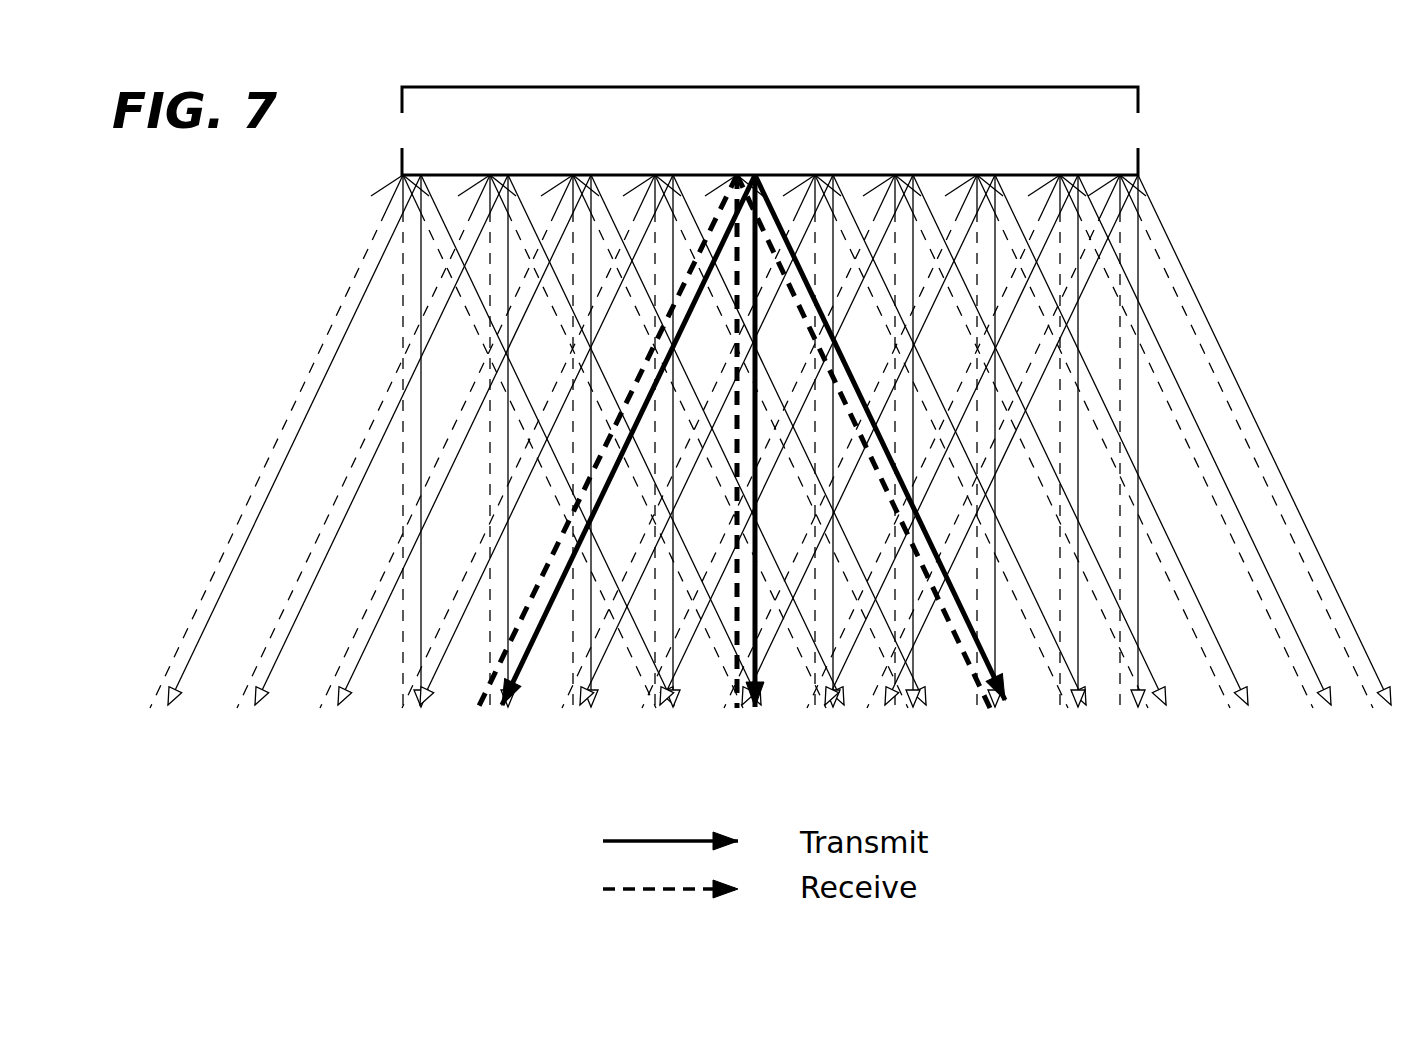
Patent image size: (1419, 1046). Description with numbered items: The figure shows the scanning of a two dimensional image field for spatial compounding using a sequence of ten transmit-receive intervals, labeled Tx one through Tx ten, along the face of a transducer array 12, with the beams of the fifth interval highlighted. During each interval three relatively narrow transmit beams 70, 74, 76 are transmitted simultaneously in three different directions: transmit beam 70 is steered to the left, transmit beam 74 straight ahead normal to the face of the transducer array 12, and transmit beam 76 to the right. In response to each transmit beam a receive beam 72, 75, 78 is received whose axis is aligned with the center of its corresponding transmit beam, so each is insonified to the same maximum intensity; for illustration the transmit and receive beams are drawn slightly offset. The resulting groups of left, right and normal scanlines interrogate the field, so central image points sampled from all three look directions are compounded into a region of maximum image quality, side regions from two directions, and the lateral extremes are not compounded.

The transducer array 12 is at (657, 100).
The transmit beam 70 is at (537, 633).
The receive beam 72 is at (505, 655).
The transmit beam 74 is at (757, 548).
The receive beam 75 is at (735, 511).
The transmit beam 76 is at (1012, 691).
The receive beam 78 is at (825, 392).